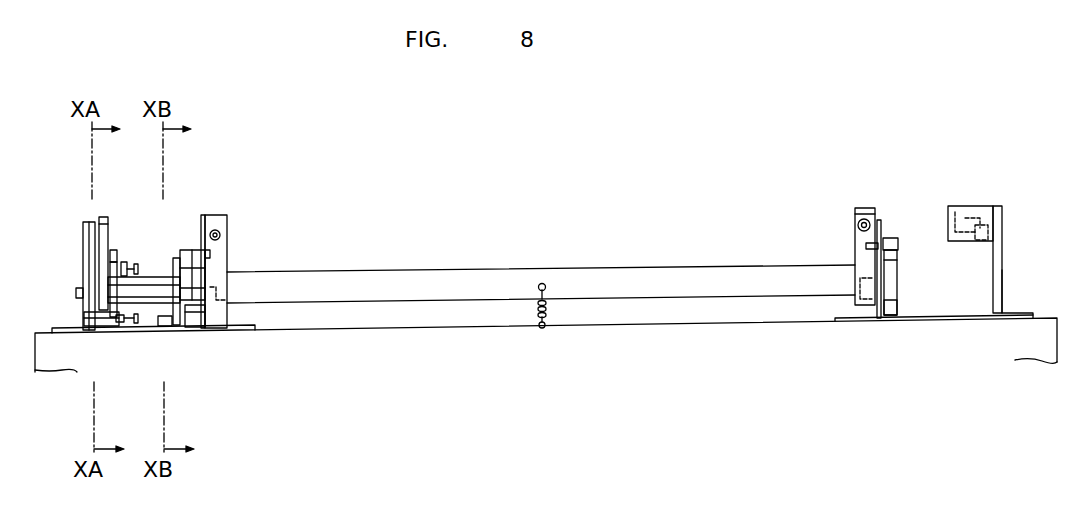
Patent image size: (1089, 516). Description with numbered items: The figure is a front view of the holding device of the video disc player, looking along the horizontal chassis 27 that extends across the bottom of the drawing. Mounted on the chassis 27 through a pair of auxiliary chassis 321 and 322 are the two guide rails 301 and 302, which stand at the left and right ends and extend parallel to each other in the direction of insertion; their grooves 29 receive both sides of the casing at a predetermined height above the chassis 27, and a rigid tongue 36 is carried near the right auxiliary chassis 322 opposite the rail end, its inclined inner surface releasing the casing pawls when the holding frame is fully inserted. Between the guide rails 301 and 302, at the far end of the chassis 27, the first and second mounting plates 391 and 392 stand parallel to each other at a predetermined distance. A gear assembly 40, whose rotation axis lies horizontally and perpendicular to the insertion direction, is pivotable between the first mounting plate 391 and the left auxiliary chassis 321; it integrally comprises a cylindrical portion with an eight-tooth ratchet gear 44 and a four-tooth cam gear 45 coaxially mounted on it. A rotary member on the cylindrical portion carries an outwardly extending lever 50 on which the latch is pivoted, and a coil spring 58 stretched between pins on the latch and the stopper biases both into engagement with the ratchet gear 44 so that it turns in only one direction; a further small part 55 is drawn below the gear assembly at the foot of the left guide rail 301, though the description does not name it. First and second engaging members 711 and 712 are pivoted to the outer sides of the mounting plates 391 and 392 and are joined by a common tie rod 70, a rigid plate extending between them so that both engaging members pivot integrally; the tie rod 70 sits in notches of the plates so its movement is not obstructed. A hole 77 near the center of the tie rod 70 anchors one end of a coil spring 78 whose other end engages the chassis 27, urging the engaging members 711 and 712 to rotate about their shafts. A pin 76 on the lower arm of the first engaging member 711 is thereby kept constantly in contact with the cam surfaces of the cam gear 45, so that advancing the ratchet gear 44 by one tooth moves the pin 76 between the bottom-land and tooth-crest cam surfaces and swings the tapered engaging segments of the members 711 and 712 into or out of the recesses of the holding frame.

The chassis 27 is at (1040, 322).
The grooves 29 is at (979, 240).
The rigid tongues 36 is at (957, 212).
The gear assembly 40 is at (156, 277).
The ratchet gear 44 is at (124, 322).
The cam gear 45 is at (176, 326).
The lever 50 is at (104, 217).
The bracket 55 is at (99, 327).
The coil spring 58 is at (136, 254).
The tie rod 70 is at (650, 268).
The pin 76 is at (165, 327).
The hole 77 is at (543, 283).
The coil spring 78 is at (549, 312).
The guide rail 301 is at (92, 222).
The guide rail 302 is at (997, 207).
The auxiliary chassis 321 is at (84, 278).
The auxiliary chassis 322 is at (1002, 268).
The first mounting plate 391 is at (203, 215).
The second mounting plate 392 is at (879, 220).
The first engaging member 711 is at (197, 329).
The second engaging member 712 is at (899, 292).